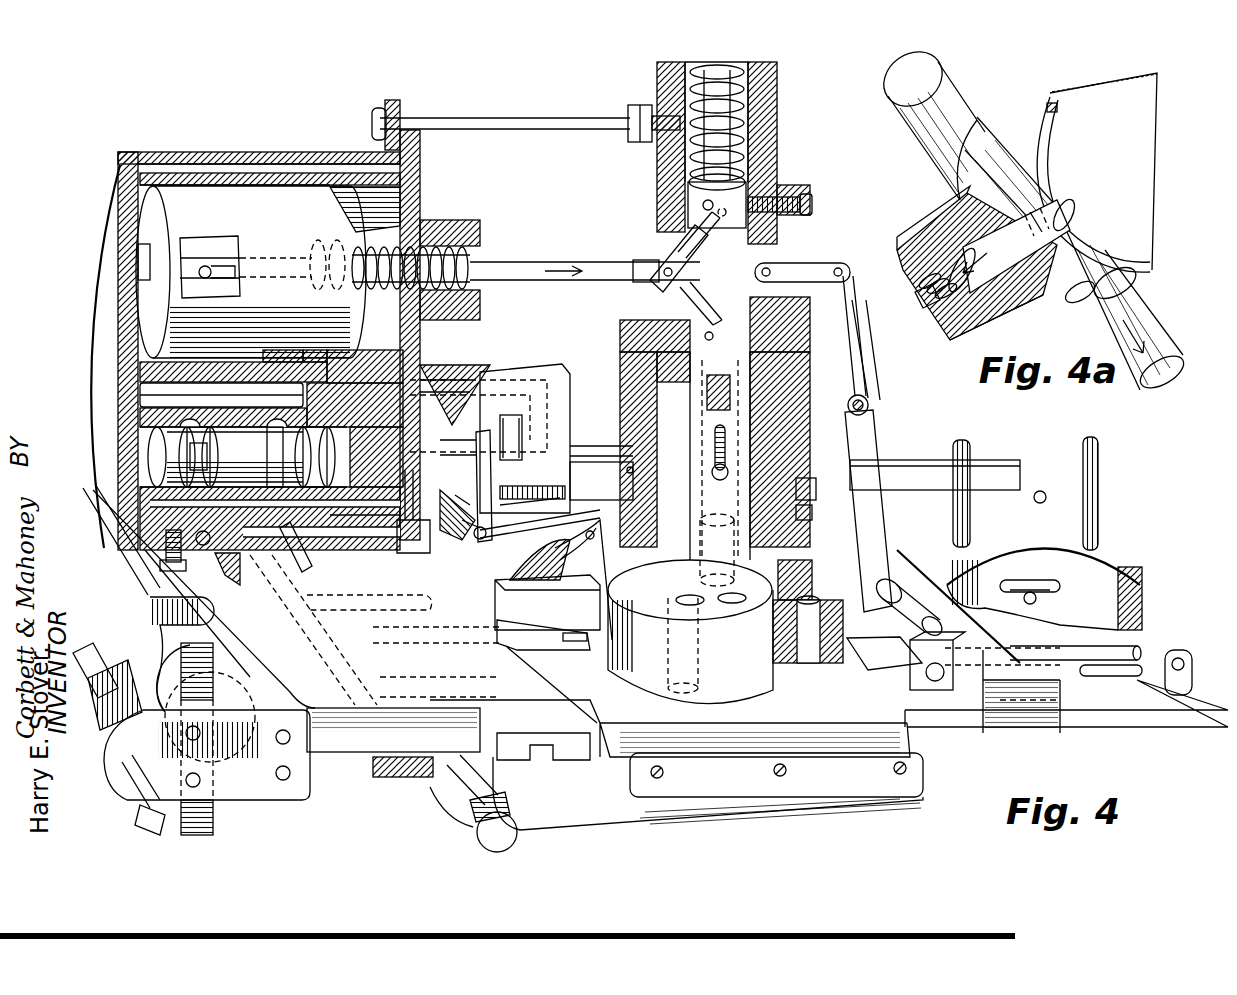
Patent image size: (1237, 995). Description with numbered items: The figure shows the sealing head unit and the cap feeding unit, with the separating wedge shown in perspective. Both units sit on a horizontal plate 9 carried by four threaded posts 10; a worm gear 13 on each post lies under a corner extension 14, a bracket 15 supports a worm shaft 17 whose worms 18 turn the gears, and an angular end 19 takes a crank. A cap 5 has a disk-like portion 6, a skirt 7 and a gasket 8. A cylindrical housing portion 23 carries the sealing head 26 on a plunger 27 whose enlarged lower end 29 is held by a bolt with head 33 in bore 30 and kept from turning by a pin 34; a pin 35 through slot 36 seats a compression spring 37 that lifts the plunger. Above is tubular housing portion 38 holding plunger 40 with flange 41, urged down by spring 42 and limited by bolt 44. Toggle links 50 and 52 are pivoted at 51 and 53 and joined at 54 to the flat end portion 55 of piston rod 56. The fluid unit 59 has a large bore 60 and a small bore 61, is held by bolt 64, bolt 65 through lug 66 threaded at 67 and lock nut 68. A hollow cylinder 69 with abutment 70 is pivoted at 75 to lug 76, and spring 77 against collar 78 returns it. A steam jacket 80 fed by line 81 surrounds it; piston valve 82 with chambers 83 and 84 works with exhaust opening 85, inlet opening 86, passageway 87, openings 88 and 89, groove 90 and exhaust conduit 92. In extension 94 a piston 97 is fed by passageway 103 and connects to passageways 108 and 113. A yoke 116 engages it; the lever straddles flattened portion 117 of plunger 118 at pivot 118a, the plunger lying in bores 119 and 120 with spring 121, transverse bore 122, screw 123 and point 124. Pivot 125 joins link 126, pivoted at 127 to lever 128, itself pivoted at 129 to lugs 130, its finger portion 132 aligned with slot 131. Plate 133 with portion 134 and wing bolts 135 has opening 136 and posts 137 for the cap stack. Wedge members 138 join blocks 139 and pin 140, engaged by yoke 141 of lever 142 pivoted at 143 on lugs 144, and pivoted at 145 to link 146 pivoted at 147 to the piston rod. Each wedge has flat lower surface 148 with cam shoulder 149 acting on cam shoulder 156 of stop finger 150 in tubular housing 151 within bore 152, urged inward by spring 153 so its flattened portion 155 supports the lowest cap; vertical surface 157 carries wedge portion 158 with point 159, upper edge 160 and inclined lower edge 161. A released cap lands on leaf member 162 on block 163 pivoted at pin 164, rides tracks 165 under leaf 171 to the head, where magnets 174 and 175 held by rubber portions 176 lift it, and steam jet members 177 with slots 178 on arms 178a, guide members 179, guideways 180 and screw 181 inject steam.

In FIG. 4A, the cap 5 is at (1156, 124).
In FIG. 4A, the disk-like portion 6 is at (1133, 88).
In FIG. 4A, the annular skirt 7 is at (1050, 100).
In FIG. 4A, the annular gasket 8 is at (1052, 126).
In FIG. 4, the plate 9 is at (337, 752).
In FIG. 4, the post 10 is at (213, 820).
In FIG. 4, the worm gear 13 is at (235, 692).
In FIG. 4, the corner extension 14 is at (345, 356).
In FIG. 4, the bracket 15 is at (262, 790).
In FIG. 4, the worm shaft 17 is at (95, 660).
In FIG. 4, the worm 18 is at (115, 688).
In FIG. 4, the angular end 19 is at (148, 822).
In FIG. 4, the cylindrical housing portion 23 is at (812, 346).
In FIG. 4, the sealing head 26 is at (690, 695).
In FIG. 4, the plunger 27 is at (668, 370).
In FIG. 4, the enlarged lower end 29 is at (695, 605).
In FIG. 4, the bore 30 is at (800, 516).
In FIG. 4, the head 33 is at (717, 550).
In FIG. 4, the pin 34 is at (733, 604).
In FIG. 4, the pin 35 is at (800, 494).
In FIG. 4, the slot 36 is at (690, 425).
In FIG. 4, the compression spring 37 is at (668, 393).
In FIG. 4, the housing portion 38 is at (777, 127).
In FIG. 4, the plunger 40 is at (715, 68).
In FIG. 4, the peripheral flange 41 is at (760, 168).
In FIG. 4, the compression spring 42 is at (748, 88).
In FIG. 4, the bolt 44 is at (812, 200).
In FIG. 4, the link 50 is at (688, 240).
In FIG. 4, the pivot 51 is at (712, 222).
In FIG. 4, the link 52 is at (706, 304).
In FIG. 4, the pivot 53 is at (705, 335).
In FIG. 4, the pivot 54 is at (655, 268).
In FIG. 4, the flat end portion 55 is at (645, 282).
In FIG. 4, the piston rod 56 is at (563, 262).
In FIG. 4, the fluid-operated cylinder and piston unit 59 is at (95, 228).
In FIG. 4, the cylinder bore 60 is at (355, 215).
In FIG. 4, the cylinder bore 61 is at (150, 435).
In FIG. 4, the bolt 64 is at (160, 570).
In FIG. 4, the bolt 65 is at (502, 118).
In FIG. 4, the lug 66 is at (395, 100).
In FIG. 4, the threaded connection 67 is at (660, 116).
In FIG. 4, the lock nut 68 is at (634, 110).
In FIG. 4, the hollow cylinder 69 is at (188, 200).
In FIG. 4, the abutment 70 is at (138, 263).
In FIG. 4, the pivotal connection 75 is at (208, 266).
In FIG. 4, the bifurcated lug 76 is at (197, 252).
In FIG. 4, the compression spring 77 is at (362, 252).
In FIG. 4, the collar 78 is at (314, 240).
In FIG. 4, the steam jacket 80 is at (262, 575).
In FIG. 4, the main steam line 81 is at (310, 568).
In FIG. 4, the piston valve 82 is at (160, 455).
In FIG. 4, the annular chamber 83 is at (303, 440).
In FIG. 4, the annular chamber 84 is at (190, 455).
In FIG. 4, the exhaust opening 85 is at (190, 418).
In FIG. 4, the inlet opening 86 is at (272, 422).
In FIG. 4, the longitudinal passageway 87 is at (210, 398).
In FIG. 4, the opening 88 is at (150, 372).
In FIG. 4, the opening 89 is at (320, 350).
In FIG. 4, the groove 90 is at (282, 350).
In FIG. 4, the exhaust conduit 92 is at (196, 537).
In FIG. 4, the extension 94 is at (495, 372).
In FIG. 4, the piston 97 is at (445, 390).
In FIG. 4, the steam passageway 103 is at (372, 520).
In FIG. 4, the passageway 108 is at (338, 520).
In FIG. 4, the passageway 113 is at (528, 372).
In FIG. 4, the yoke portion 116 is at (482, 470).
In FIG. 4, the flattened portion 117 is at (540, 532).
In FIG. 4, the plunger 118 is at (555, 478).
In FIG. 4, the pivotal connection 118a is at (511, 423).
In FIG. 4, the bore 119 is at (461, 378).
In FIG. 4, the bore 120 is at (529, 520).
In FIG. 4, the compression spring 121 is at (566, 494).
In FIG. 4, the transverse bore 122 is at (455, 532).
In FIG. 4, the screw 123 is at (475, 540).
In FIG. 4, the pointed inner end 124 is at (411, 516).
In FIG. 4, the pivot 125 is at (485, 540).
In FIG. 4, the link 126 is at (586, 562).
In FIG. 4, the pivot 127 is at (595, 535).
In FIG. 4, the lever 128 is at (590, 603).
In FIG. 4, the pivot 129 is at (631, 466).
In FIG. 4, the lugs 130 is at (588, 446).
In FIG. 4, the slot 131 is at (648, 600).
In FIG. 4, the finger portion 132 is at (612, 655).
In FIG. 4, the plate 133 is at (1020, 486).
In FIG. 4, the portion 134 is at (945, 686).
In FIG. 4, the wing bolt 135 is at (1045, 493).
In FIG. 4, the opening 136 is at (1095, 568).
In FIG. 4, the post 137 is at (1098, 497).
In FIG. 4, the cap separating wedge member 138 is at (1120, 652).
In FIG. 4A, the cap separating wedge member 138 is at (1148, 316).
In FIG. 4, the block member 139 is at (935, 650).
In FIG. 4, the pin 140 is at (912, 612).
In FIG. 4, the yoke 141 is at (900, 598).
In FIG. 4, the lever 142 is at (880, 546).
In FIG. 4, the pivot 143 is at (870, 404).
In FIG. 4, the lugs 144 is at (872, 385).
In FIG. 4, the pivot 145 is at (850, 268).
In FIG. 4, the link 146 is at (836, 265).
In FIG. 4, the pivot 147 is at (790, 268).
In FIG. 4A, the flat lower surface 148 is at (1062, 288).
In FIG. 4A, the cam shoulder 149 is at (972, 254).
In FIG. 4A, the stop finger 150 is at (997, 312).
In FIG. 4A, the tubular housing 151 is at (975, 337).
In FIG. 4A, the bore 152 is at (945, 300).
In FIG. 4A, the compression spring 153 is at (924, 292).
In FIG. 4, the flattened portion 155 is at (1036, 601).
In FIG. 4A, the flattened portion 155 is at (1070, 222).
In FIG. 4A, the cam shoulder 156 is at (1052, 218).
In FIG. 4A, the flat vertical surface 157 is at (1125, 292).
In FIG. 4, the cap separating wedge portion 158 is at (1050, 582).
In FIG. 4A, the cap separating wedge portion 158 is at (990, 148).
In FIG. 4, the point 159 is at (1032, 580).
In FIG. 4A, the point 159 is at (1040, 200).
In FIG. 4A, the upper edge 160 is at (962, 130).
In FIG. 4A, the lower edge 161 is at (998, 172).
In FIG. 4, the leaf member 162 is at (1098, 676).
In FIG. 4, the block portion 163 is at (1152, 647).
In FIG. 4, the pivot pin 164 is at (1185, 664).
In FIG. 4, the tracks 165 is at (955, 728).
In FIG. 4, the leaf member 171 is at (875, 668).
In FIG. 4, the magnet 174 is at (692, 665).
In FIG. 4, the magnet 175 is at (813, 663).
In FIG. 4, the cylindrical rubber portion 176 is at (812, 580).
In FIG. 4, the steam jet member 177 is at (535, 642).
In FIG. 4, the steam slot 178 is at (575, 645).
In FIG. 4, the arm 178a is at (490, 660).
In FIG. 4, the guide member 179 is at (462, 800).
In FIG. 4, the guideway 180 is at (400, 778).
In FIG. 4, the screw member 181 is at (505, 835).